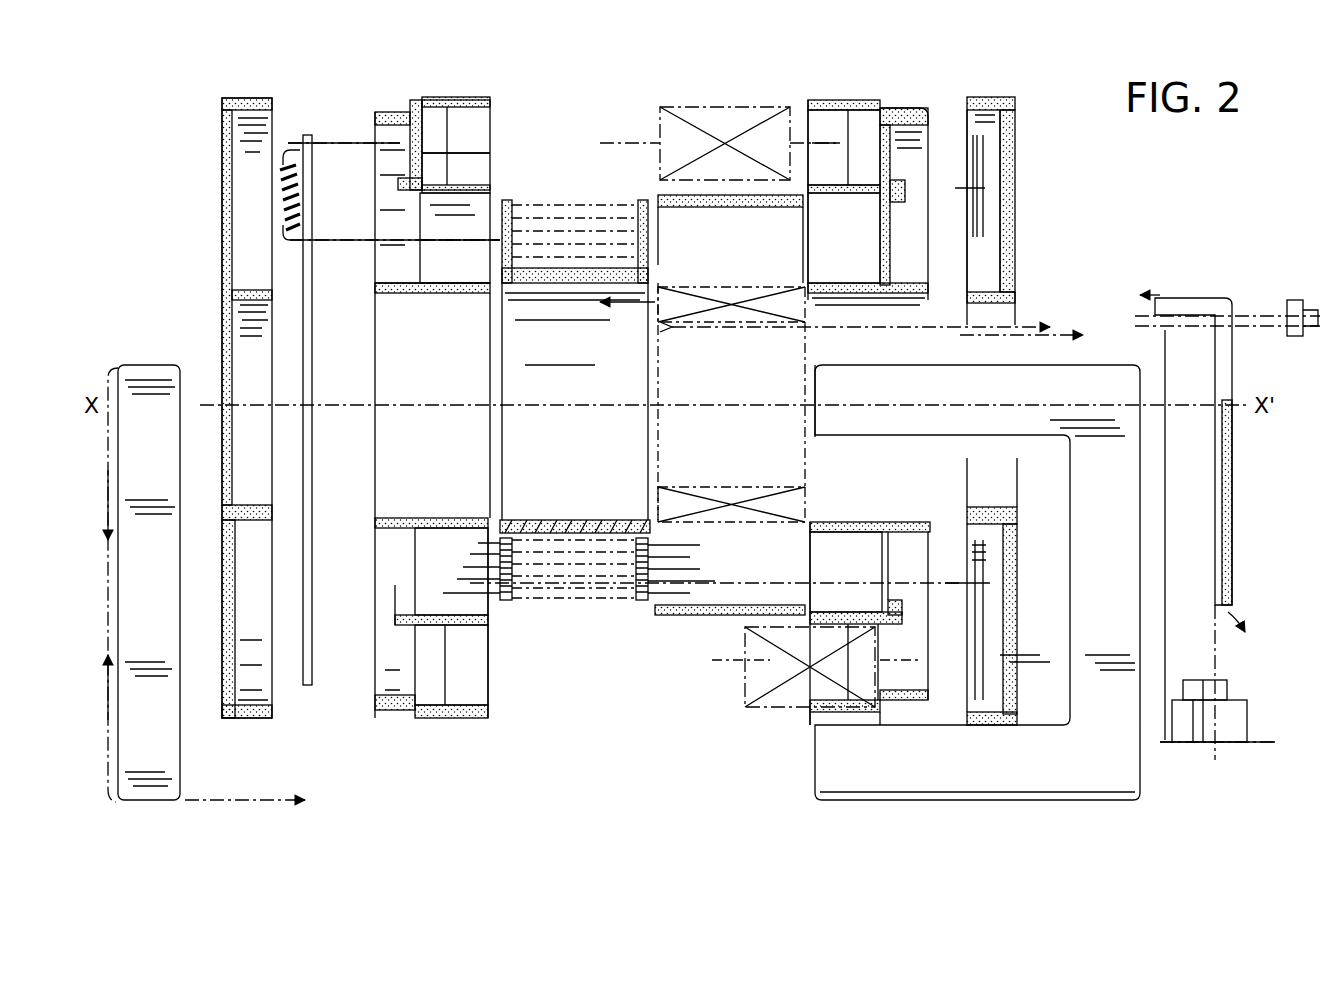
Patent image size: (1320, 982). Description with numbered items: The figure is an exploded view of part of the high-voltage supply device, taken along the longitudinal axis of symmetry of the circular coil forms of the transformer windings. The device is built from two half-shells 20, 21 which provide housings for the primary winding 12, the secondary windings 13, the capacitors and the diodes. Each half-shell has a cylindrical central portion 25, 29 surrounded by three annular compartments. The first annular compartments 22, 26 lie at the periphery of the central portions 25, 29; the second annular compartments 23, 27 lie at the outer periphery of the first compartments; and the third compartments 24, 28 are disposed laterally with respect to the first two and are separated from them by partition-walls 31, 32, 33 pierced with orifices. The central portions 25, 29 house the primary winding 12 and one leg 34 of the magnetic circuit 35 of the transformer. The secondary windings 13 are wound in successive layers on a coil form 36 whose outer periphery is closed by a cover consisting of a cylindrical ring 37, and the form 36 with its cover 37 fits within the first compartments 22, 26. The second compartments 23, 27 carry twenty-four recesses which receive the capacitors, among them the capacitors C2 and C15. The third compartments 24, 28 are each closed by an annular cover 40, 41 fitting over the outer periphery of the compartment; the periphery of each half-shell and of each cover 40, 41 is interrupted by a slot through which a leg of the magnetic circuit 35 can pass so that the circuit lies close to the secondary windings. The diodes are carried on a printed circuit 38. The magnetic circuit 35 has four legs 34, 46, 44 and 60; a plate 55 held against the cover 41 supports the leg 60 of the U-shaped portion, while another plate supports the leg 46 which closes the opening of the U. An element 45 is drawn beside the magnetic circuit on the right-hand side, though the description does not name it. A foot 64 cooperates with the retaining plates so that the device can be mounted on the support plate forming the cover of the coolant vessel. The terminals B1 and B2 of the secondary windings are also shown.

The primary winding 12 is at (758, 330).
The secondary windings 13 is at (598, 205).
The half-shell 20 is at (440, 100).
The half-shell 21 is at (812, 105).
The first annular compartment 22 is at (482, 300).
The second annular compartment 23 is at (480, 122).
The third annular compartment 24 is at (390, 135).
The cylindrical central portion 25 is at (385, 300).
The first annular compartment 26 is at (835, 262).
The second annular compartment 27 is at (895, 110).
The third annular compartment 28 is at (938, 118).
The cylindrical central portion 29 is at (838, 350).
The partition-wall 31 is at (887, 155).
The partition-wall 32 is at (420, 262).
The partition-wall 33 is at (482, 152).
The leg of the magnetic circuit 34 is at (958, 378).
The magnetic circuit 35 is at (1150, 780).
The coil form 36 is at (608, 520).
The cylindrical ring 37 is at (665, 618).
The printed circuit 38 is at (332, 463).
The annular cover 40 is at (222, 200).
The annular cover 41 is at (1015, 135).
The leg of the magnetic circuit 44 is at (948, 770).
The lever 45 is at (1085, 360).
The leg of the magnetic circuit 46 is at (152, 380).
The plate 55 is at (1232, 575).
The leg of the magnetic circuit 60 is at (1075, 565).
The foot 64 is at (1245, 725).
The brake B1 is at (478, 543).
The brake B2 is at (688, 545).
The capacitor C15 is at (726, 92).
The capacitor C2 is at (785, 715).